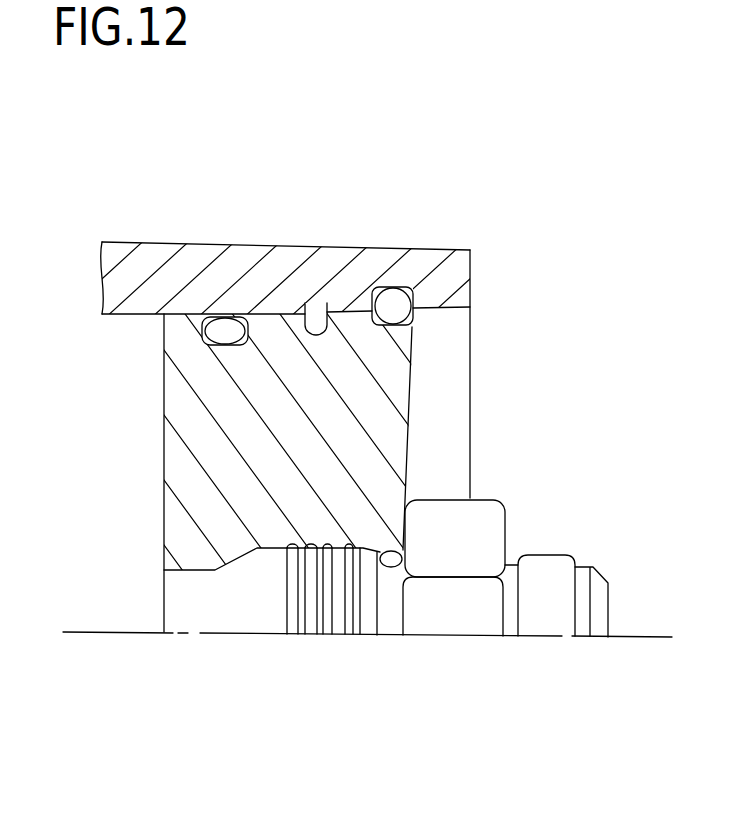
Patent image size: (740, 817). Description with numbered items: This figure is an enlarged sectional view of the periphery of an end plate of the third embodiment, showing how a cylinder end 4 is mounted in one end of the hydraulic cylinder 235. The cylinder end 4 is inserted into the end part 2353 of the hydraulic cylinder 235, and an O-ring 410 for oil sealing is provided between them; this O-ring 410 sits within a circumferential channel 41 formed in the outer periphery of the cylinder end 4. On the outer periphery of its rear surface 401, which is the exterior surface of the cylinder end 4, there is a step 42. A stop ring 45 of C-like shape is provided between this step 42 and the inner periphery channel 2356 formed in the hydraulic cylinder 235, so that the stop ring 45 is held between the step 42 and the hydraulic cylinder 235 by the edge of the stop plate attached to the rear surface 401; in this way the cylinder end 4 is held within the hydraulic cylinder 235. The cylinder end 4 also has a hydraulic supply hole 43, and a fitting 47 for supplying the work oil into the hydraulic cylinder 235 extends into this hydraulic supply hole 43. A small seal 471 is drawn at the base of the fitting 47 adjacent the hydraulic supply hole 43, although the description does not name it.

The cylinder end 4 is at (205, 440).
The circumferential channel 41 is at (305, 304).
The O-ring 410 is at (234, 330).
The step 42 is at (413, 323).
The hydraulic supply hole 43 is at (297, 548).
The stop ring 45 is at (393, 304).
The fitting 47 is at (545, 608).
The seal ring 471 is at (392, 564).
The rear surface 401 is at (407, 417).
The hydraulic cylinder 235 is at (154, 253).
The end part 2353 is at (327, 316).
The inner periphery channel 2356 is at (413, 300).